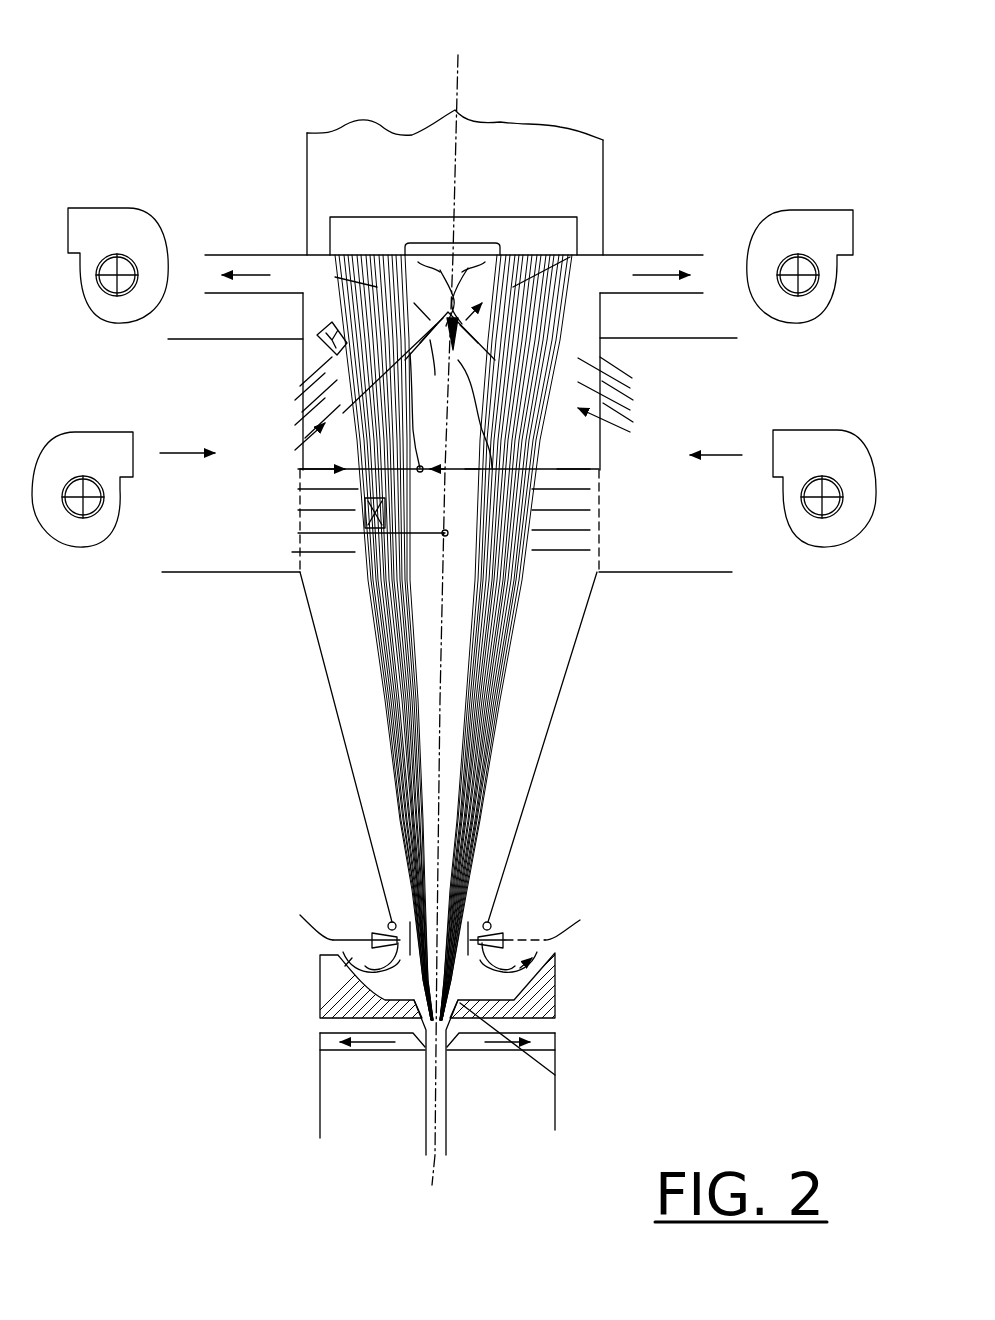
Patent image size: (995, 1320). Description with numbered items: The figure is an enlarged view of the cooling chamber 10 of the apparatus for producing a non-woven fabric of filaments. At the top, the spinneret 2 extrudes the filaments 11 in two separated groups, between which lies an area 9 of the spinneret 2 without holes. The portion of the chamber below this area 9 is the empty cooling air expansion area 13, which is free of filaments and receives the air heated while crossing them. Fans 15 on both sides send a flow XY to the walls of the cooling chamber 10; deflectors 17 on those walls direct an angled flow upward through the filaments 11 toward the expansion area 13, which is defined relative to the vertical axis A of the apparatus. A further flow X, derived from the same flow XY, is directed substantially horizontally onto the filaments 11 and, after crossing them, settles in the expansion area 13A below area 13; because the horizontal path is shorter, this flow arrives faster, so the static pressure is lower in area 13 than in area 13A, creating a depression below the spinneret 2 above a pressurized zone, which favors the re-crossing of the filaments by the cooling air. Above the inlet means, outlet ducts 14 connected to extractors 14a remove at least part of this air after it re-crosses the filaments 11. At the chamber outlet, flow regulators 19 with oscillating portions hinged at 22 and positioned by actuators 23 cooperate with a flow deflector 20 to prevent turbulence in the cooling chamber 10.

The spinneret 2 is at (565, 222).
The area of the spinneret without holes 9 is at (433, 236).
The cooling chamber 10 is at (317, 660).
The filaments 11 is at (481, 535).
The cooling air expansion area 13 is at (530, 527).
The expansion area of flow X 13A is at (437, 487).
The outlet duct 14 is at (253, 262).
The extractor 14a is at (113, 226).
The fans 15 is at (73, 535).
The deflectors 17 is at (623, 375).
The flow regulators 19 is at (333, 933).
The flow deflector 20 is at (557, 977).
The hinge 22 is at (513, 920).
The actuators 23 is at (343, 950).
The vertical axis A is at (458, 68).
The flow X is at (622, 515).
The flow XY is at (165, 452).